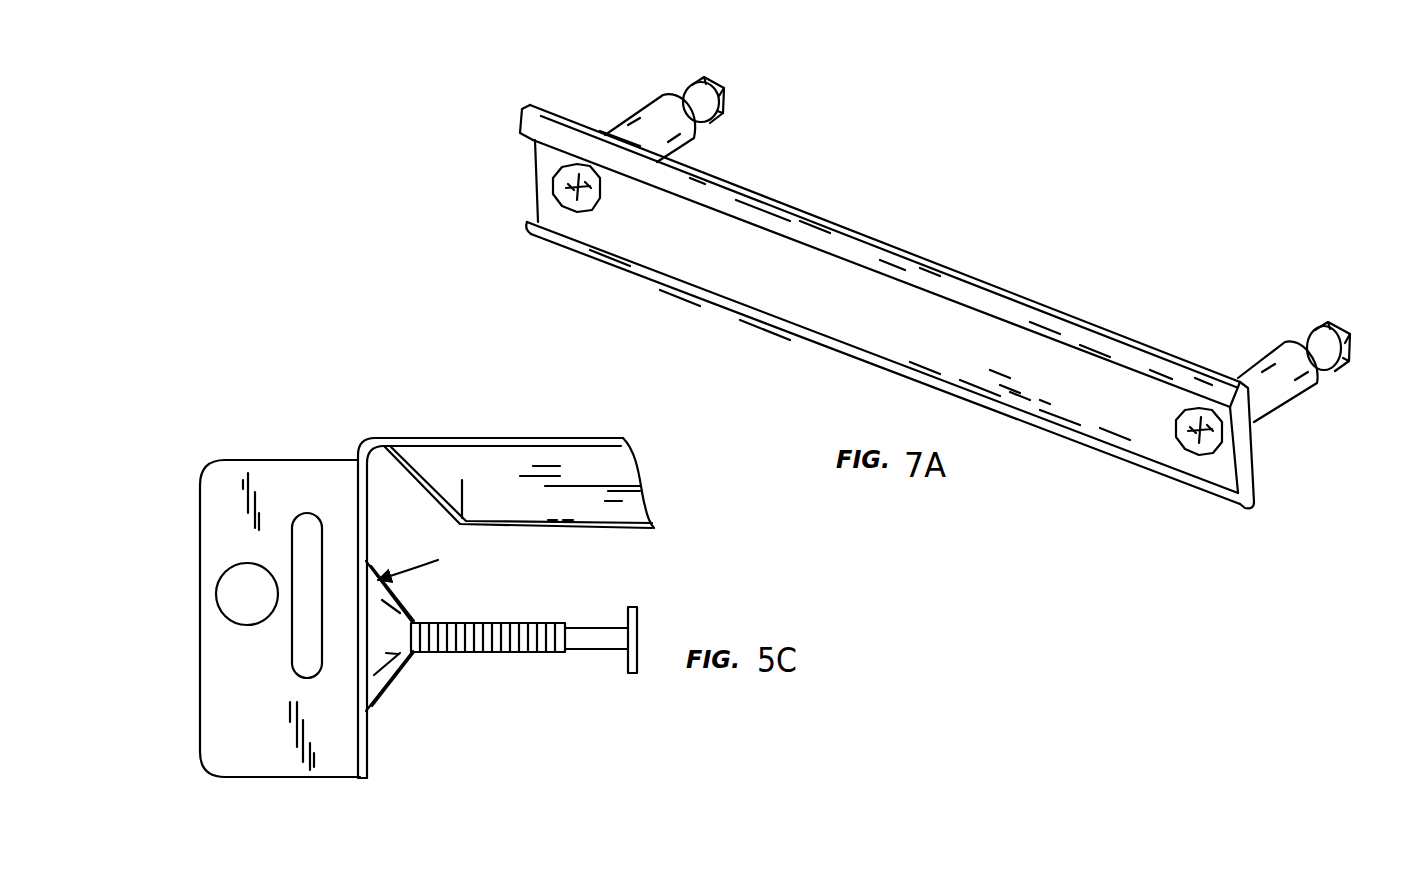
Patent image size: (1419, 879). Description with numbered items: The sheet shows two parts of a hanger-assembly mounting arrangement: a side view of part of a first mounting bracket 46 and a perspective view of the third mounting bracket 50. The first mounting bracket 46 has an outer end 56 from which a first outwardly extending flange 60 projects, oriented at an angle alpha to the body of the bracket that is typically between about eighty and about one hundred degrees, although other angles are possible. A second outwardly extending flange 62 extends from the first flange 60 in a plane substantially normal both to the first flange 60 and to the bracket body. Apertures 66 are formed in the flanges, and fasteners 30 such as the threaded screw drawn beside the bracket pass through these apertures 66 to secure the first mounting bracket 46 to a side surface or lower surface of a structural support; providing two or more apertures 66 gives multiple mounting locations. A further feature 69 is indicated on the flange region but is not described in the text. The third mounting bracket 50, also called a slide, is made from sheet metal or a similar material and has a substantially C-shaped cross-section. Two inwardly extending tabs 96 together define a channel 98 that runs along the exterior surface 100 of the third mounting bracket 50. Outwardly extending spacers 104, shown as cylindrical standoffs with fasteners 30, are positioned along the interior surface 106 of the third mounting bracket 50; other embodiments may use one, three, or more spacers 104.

In FIG. 7A, the fastener 30 is at (715, 86).
In FIG. 5C, the fastener 30 is at (607, 640).
In FIG. 5C, the first mounting bracket 46 is at (433, 406).
In FIG. 7A, the third mounting bracket 50 is at (988, 125).
In FIG. 5C, the outer end 56 is at (388, 437).
In FIG. 5C, the first outwardly extending flange 60 is at (361, 780).
In FIG. 5C, the second outwardly extending flange 62 is at (220, 476).
In FIG. 5C, the aperture 66 is at (226, 614).
In FIG. 5C, the angled wing portion 69 is at (478, 527).
In FIG. 7A, the inwardly extending tab 96 is at (521, 136).
In FIG. 7A, the channel 98 is at (1233, 470).
In FIG. 7A, the exterior surface 100 is at (1020, 337).
In FIG. 7A, the spacer 104 is at (648, 118).
In FIG. 7A, the interior surface 106 is at (870, 237).